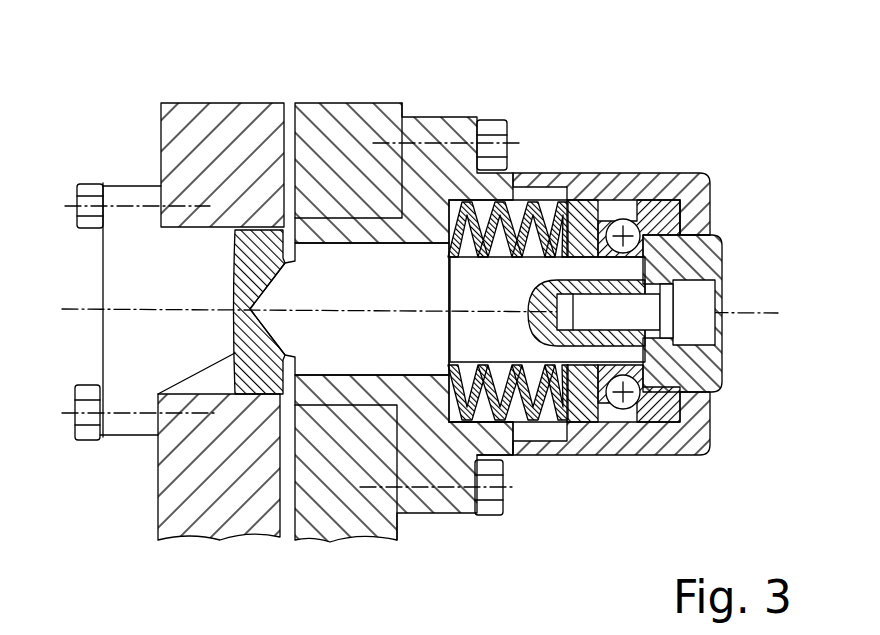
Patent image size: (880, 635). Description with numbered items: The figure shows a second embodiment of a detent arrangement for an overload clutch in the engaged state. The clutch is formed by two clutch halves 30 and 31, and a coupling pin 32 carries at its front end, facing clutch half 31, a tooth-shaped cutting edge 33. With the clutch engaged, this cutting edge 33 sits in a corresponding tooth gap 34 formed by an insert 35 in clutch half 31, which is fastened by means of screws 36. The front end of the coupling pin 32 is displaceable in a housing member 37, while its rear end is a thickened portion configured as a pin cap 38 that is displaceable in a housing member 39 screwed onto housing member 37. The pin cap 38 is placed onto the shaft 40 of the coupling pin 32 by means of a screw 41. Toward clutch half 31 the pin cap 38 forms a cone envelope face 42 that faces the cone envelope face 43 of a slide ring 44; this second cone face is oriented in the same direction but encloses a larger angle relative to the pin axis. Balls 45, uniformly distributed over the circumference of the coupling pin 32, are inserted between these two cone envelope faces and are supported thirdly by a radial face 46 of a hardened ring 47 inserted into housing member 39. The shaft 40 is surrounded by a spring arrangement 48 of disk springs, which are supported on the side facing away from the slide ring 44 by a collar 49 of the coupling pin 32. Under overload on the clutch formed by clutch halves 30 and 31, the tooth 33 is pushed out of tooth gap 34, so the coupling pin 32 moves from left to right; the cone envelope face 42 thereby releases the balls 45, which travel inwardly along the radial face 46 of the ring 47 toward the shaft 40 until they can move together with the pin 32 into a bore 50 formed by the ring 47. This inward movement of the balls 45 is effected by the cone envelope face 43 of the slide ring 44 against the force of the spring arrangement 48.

The clutch half 30 is at (340, 113).
The clutch half 31 is at (178, 122).
The coupling pin 32 is at (377, 268).
The tooth-shaped cutting edge 33 is at (250, 396).
The tooth gap 34 is at (110, 435).
The insert 35 is at (124, 270).
The screws 36 is at (82, 184).
The housing member 37 is at (468, 122).
The pin cap 38 is at (700, 262).
The housing member 39 is at (660, 183).
The shaft 40 is at (493, 352).
The screw 41 is at (690, 328).
The cone envelope face 42 is at (648, 236).
The cone envelope face 43 is at (650, 385).
The slide ring 44 is at (590, 440).
The balls 45 is at (632, 205).
The radial face 46 is at (660, 425).
The hardened ring 47 is at (690, 178).
The spring arrangement 48 is at (473, 440).
The collar 49 is at (450, 352).
The bore 50 is at (710, 400).